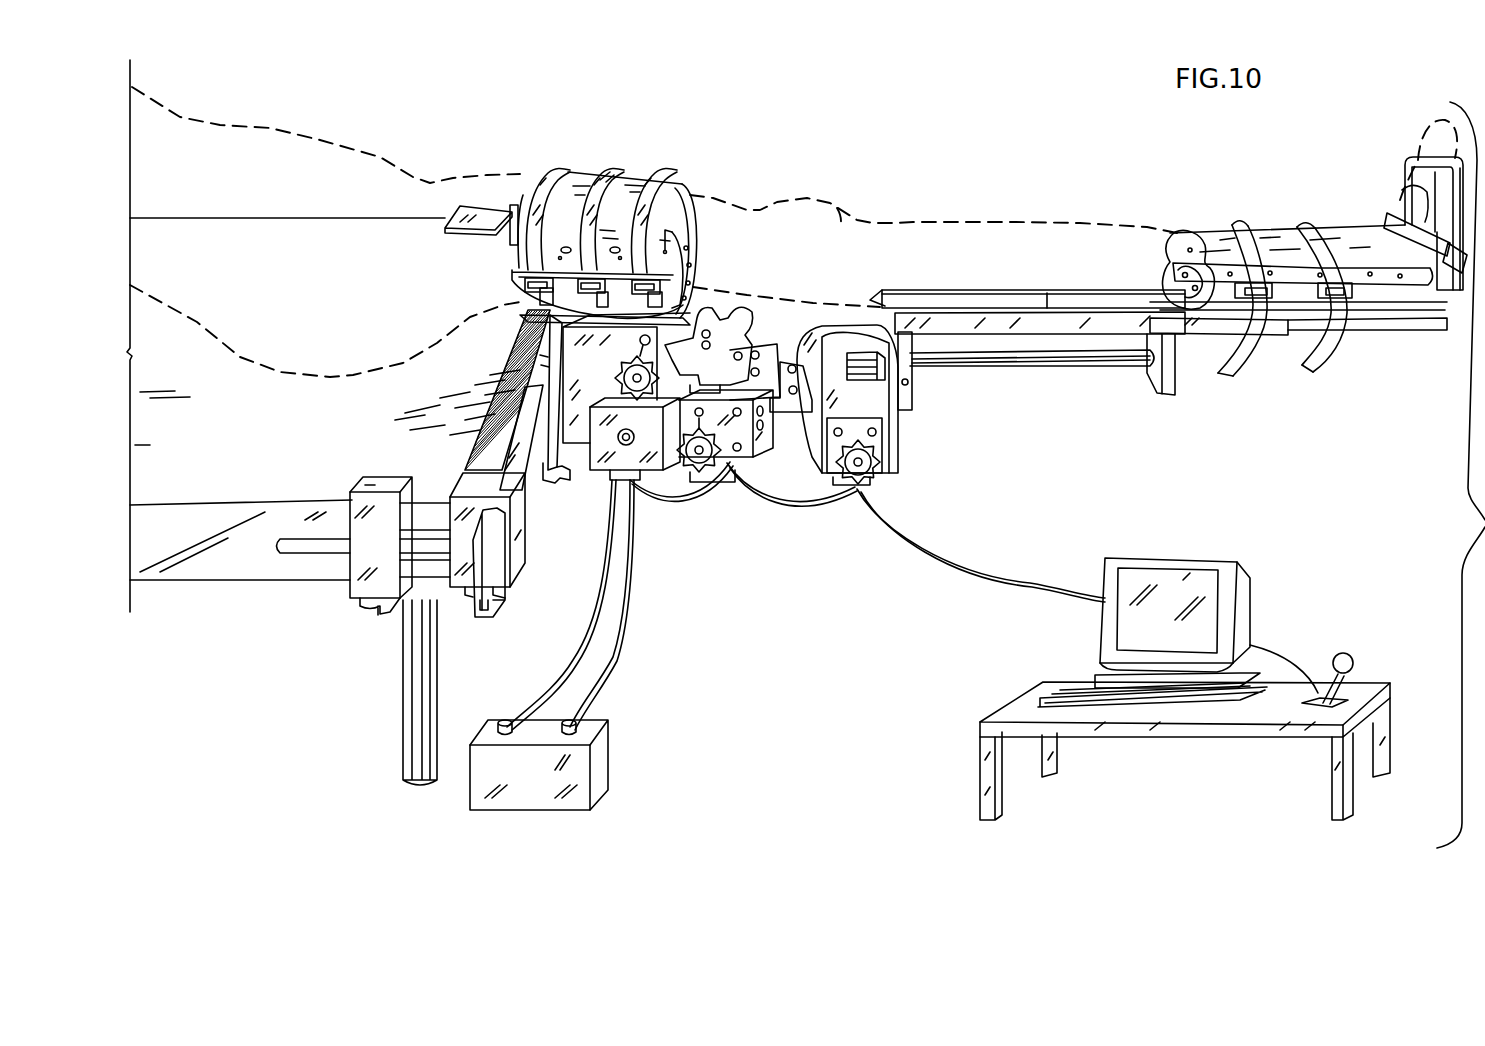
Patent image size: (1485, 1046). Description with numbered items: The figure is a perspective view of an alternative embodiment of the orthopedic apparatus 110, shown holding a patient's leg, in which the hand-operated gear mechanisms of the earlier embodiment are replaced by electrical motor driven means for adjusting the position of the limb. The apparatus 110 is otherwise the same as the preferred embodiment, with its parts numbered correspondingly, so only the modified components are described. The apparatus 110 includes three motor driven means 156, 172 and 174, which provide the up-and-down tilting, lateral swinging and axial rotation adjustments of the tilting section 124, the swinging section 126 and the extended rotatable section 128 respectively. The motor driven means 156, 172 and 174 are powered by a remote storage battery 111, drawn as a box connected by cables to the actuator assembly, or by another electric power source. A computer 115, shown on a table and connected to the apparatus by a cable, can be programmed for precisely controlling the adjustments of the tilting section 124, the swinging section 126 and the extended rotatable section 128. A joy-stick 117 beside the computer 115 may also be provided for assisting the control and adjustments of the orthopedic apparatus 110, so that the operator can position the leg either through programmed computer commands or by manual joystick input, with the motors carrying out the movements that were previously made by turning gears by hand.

The orthopedic apparatus 110 is at (931, 482).
The remote storage battery 111 is at (603, 771).
The computer 115 is at (1180, 557).
The joy-stick 117 is at (1345, 653).
The tilting section 124 is at (585, 440).
The swinging section 126 is at (758, 444).
The extended rotatable section 128 is at (907, 422).
The motor driven means 156 is at (575, 351).
The motor driven means 172 is at (716, 462).
The motor driven means 174 is at (877, 407).